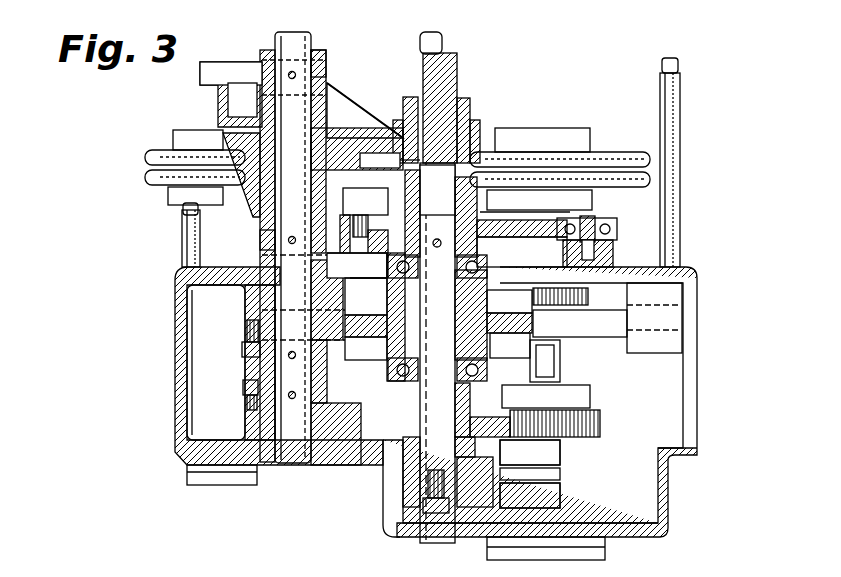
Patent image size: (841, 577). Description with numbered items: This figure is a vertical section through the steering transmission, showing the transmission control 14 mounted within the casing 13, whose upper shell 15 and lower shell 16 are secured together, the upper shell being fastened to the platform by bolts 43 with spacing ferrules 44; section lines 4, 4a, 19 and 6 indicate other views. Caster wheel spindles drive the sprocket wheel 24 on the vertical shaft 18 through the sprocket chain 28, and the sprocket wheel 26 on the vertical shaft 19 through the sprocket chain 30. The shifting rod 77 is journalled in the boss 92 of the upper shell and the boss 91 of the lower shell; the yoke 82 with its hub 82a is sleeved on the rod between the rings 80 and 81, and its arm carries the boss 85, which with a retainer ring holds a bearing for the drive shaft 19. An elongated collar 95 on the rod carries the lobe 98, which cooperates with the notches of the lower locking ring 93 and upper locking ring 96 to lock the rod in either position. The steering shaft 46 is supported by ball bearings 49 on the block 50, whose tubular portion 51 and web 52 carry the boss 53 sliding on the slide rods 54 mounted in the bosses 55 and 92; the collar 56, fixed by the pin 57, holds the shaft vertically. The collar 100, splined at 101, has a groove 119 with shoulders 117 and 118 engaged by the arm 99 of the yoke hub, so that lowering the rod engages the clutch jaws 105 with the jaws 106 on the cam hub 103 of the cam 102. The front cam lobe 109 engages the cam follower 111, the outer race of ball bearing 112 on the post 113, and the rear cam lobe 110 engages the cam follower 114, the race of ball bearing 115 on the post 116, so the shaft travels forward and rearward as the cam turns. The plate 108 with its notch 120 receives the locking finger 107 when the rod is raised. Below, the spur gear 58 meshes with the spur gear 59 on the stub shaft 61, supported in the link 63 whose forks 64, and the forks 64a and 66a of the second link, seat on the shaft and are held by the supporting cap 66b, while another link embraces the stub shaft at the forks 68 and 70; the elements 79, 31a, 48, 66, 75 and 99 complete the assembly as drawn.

The transmission casing 13 is at (165, 373).
The transmission control 14 is at (612, 378).
The upper shell 15 is at (175, 268).
The lower shell 16 is at (180, 440).
The shifting rod 77 is at (298, 134).
The ball bearing 112 is at (294, 180).
The cam follower 111 is at (312, 210).
The boss 85 is at (220, 62).
The ring 80 is at (322, 70).
The yoke hub 82a is at (355, 96).
The inclined edge 79 is at (372, 100).
The yoke 82 is at (400, 125).
The arm 99 is at (342, 122).
The locking finger 107 is at (339, 160).
The clutch jaws 105 is at (390, 160).
The spline 101 is at (418, 42).
The plate like extension 108 is at (447, 113).
The collar 100 is at (472, 120).
The pin 57 is at (437, 353).
The shaft 46 is at (438, 223).
The cutaway notch 120 is at (437, 190).
The front cam lobe 109 is at (438, 206).
The cam hub 103 is at (382, 213).
The cam 102 is at (470, 217).
The collar 56 is at (365, 237).
The post 113 is at (357, 264).
The section arrows 4a is at (330, 225).
The ball bearings 49 is at (421, 327).
The block 50 is at (495, 300).
The vertical cylindrical tubular portion 51 is at (366, 358).
The horizontal web 52 is at (510, 356).
The gear 48 is at (522, 243).
The gear 31a is at (588, 292).
The slide rods 54 is at (580, 323).
The bosses 55 is at (650, 337).
The vertical shaft 18 is at (560, 348).
The cylindrical boss 53 is at (554, 365).
The stub shaft 61 is at (553, 385).
The gear 75 is at (590, 396).
The spur gear 59 is at (600, 427).
The forks 64 is at (530, 452).
The link 63 is at (530, 474).
The fork 68 is at (565, 462).
The fork 70 is at (565, 492).
The hub 66 is at (505, 480).
The fork 64a is at (410, 465).
The spur gear 58 is at (382, 445).
The fork 66a is at (405, 506).
The supporting cap 66b is at (436, 513).
The sprocket wheel 24 is at (585, 153).
The sprocket chain 28 is at (640, 179).
The shoulder 118 is at (542, 140).
The shoulder 117 is at (480, 140).
The circumferential groove 119 is at (525, 132).
The clutch jaws 106 is at (539, 199).
The rear cam lobe 110 is at (560, 210).
The ball bearing 115 is at (608, 218).
The cam follower 114 is at (617, 232).
The post 116 is at (613, 250).
The spacing ferrules 44 is at (682, 120).
The bolts 43 is at (673, 65).
The sprocket wheel 26 is at (166, 150).
The sprocket chain 30 is at (160, 185).
The ring 81 is at (260, 238).
The boss 92 is at (247, 300).
The upper locking ring 96 is at (247, 338).
The elongated collar 95 is at (258, 360).
The lobe 98 is at (258, 372).
The lower locking ring 93 is at (243, 395).
The boss 91 is at (255, 430).
The section line 4 is at (68, 115).
The vertical shaft 19 is at (131, 320).
The section line 6 is at (218, 392).